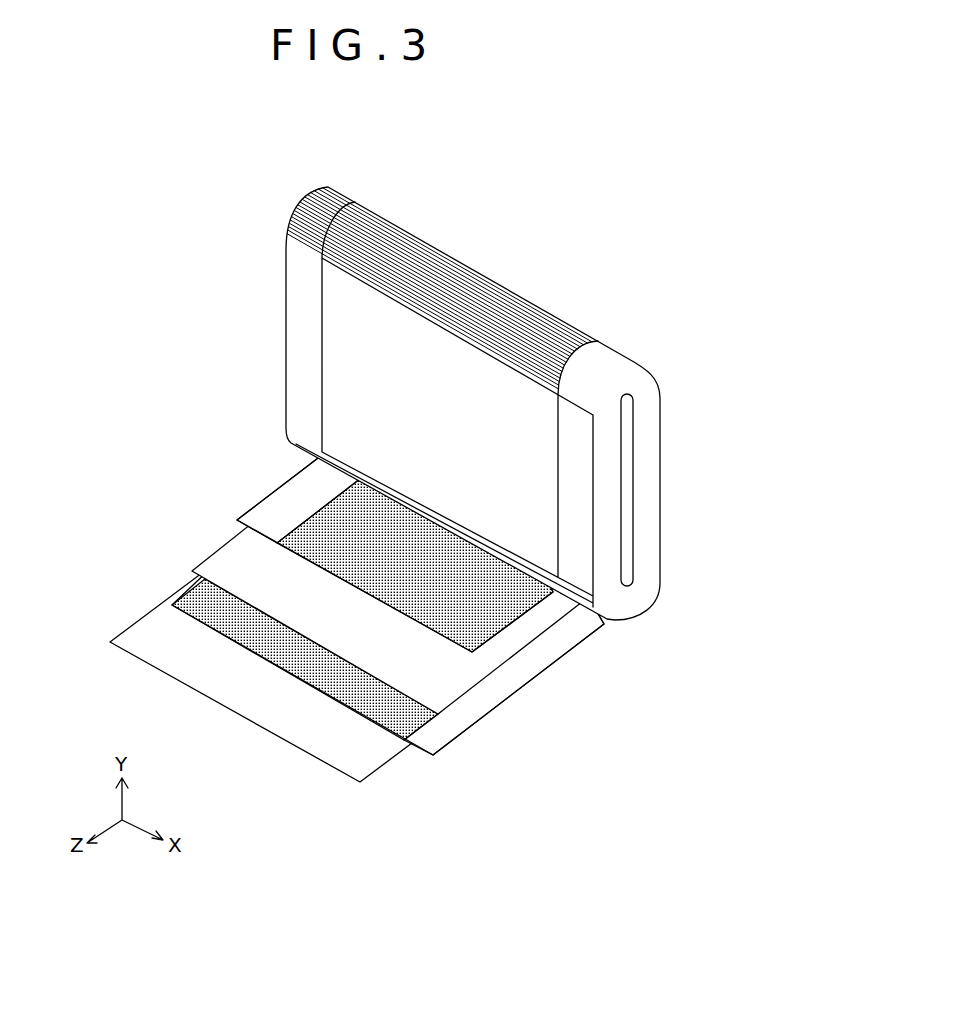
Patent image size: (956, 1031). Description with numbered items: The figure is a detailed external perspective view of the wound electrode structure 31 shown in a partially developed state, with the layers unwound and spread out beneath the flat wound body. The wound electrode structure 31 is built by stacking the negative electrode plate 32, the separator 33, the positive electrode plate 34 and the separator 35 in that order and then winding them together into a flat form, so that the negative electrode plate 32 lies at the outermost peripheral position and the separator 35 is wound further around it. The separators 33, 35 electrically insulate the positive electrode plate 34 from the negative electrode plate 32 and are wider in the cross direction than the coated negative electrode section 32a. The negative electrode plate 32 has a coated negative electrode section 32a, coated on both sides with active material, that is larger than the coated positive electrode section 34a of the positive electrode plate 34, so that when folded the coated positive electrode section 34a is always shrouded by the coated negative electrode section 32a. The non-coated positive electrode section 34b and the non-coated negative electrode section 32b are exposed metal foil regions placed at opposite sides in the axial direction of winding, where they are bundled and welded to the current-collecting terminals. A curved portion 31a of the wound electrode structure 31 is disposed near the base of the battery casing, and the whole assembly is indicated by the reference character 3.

The battery assembly 3 is at (569, 245).
The wound electrode structure 31 is at (470, 269).
The curved portion 31a is at (628, 607).
The negative electrode plate 32 is at (388, 615).
The coated negative electrode section 32a is at (400, 716).
The non-coated negative electrode section 32b is at (472, 707).
The separator 33 is at (228, 556).
The positive electrode plate 34 is at (365, 539).
The coated positive electrode section 34a is at (336, 503).
The non-coated positive electrode section 34b is at (280, 457).
The separator 35 is at (142, 626).